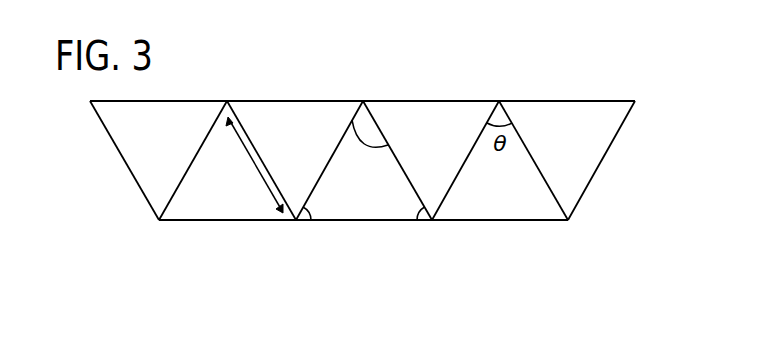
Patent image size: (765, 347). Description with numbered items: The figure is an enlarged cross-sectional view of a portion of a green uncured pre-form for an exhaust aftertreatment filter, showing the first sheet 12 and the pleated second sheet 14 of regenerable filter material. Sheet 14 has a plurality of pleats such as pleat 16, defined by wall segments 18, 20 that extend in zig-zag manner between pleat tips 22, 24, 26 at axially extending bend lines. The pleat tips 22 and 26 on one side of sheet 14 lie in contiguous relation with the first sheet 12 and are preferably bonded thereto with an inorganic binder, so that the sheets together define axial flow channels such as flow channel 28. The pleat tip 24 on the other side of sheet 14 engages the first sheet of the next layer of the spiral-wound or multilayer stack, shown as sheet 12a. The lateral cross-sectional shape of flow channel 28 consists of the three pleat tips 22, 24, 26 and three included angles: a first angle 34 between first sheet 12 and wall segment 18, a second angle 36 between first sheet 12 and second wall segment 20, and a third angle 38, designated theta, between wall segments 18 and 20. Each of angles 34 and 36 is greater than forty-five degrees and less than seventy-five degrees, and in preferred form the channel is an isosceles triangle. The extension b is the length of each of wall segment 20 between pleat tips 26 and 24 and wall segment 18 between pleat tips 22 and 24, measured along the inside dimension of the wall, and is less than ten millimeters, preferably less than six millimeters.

The first sheet 12 is at (532, 221).
The sheet of next layer 12a is at (575, 100).
The second sheet 14 is at (602, 163).
The pleat 16 is at (175, 173).
The first wall segment 18 is at (327, 162).
The second wall segment 20 is at (397, 158).
The pleat tip 22 is at (297, 222).
The pleat tip 24 is at (363, 101).
The pleat tip 26 is at (432, 222).
The axial flow channel 28 is at (373, 160).
The first angle 34 is at (313, 219).
The second angle 36 is at (417, 219).
The third angle 38 is at (388, 147).
The extension b is at (252, 168).